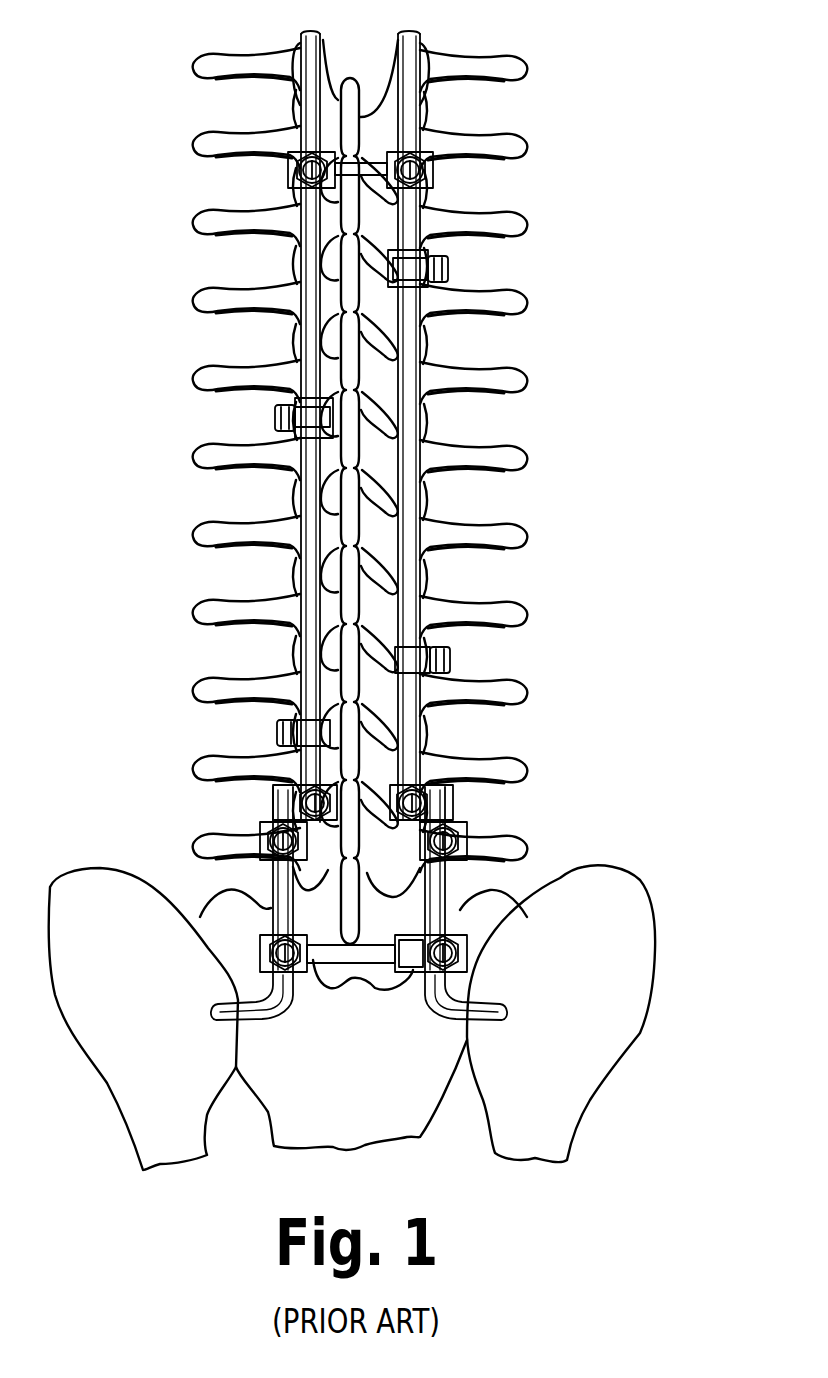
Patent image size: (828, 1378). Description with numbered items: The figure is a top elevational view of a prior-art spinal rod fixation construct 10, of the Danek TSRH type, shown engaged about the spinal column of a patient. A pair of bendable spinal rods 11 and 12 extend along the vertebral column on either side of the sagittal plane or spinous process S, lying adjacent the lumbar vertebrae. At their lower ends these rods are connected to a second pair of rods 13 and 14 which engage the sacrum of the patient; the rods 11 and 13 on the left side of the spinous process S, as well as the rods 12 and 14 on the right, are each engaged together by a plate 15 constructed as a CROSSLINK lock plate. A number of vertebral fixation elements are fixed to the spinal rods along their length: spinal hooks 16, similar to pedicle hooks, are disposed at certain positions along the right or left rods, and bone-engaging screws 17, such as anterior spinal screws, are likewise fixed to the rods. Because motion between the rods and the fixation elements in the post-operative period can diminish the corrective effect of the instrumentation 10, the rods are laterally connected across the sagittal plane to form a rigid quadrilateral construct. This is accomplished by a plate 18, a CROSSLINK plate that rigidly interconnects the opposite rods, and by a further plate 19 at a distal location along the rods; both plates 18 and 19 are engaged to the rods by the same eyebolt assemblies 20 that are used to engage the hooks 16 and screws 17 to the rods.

The spinous process S is at (350, 82).
The construct 10 is at (612, 346).
The spinal rod 11 is at (318, 524).
The spinal rod 12 is at (405, 534).
The rod 13 is at (272, 893).
The rod 14 is at (448, 882).
The plate 15 is at (276, 803).
The spinal hook 16 is at (432, 252).
The bone-engaging screw 17 is at (447, 645).
The plate 18 is at (338, 962).
The plate 19 is at (372, 167).
The eyebolt assembly 20 is at (310, 172).